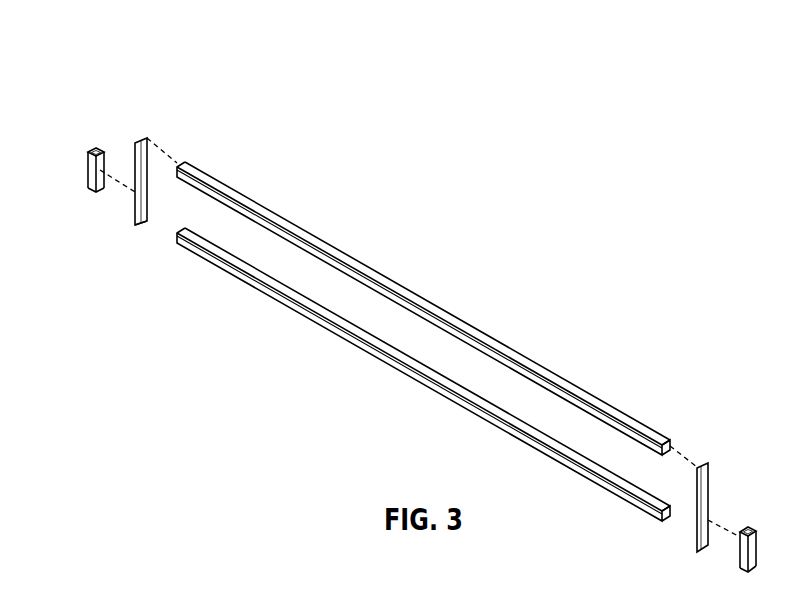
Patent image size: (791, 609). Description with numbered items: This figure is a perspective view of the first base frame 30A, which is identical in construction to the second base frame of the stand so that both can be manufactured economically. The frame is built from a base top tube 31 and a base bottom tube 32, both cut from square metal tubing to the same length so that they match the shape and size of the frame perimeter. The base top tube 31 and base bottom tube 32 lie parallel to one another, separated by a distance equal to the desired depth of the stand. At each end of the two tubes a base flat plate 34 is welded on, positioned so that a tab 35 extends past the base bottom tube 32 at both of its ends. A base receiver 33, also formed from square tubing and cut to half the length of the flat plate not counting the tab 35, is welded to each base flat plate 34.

The first base frame 30A is at (190, 335).
The base top tube 31 is at (423, 308).
The base bottom tube 32 is at (370, 357).
The base receiver 33 is at (96, 147).
The base flat plate 34 is at (147, 137).
The tab 35 is at (135, 222).